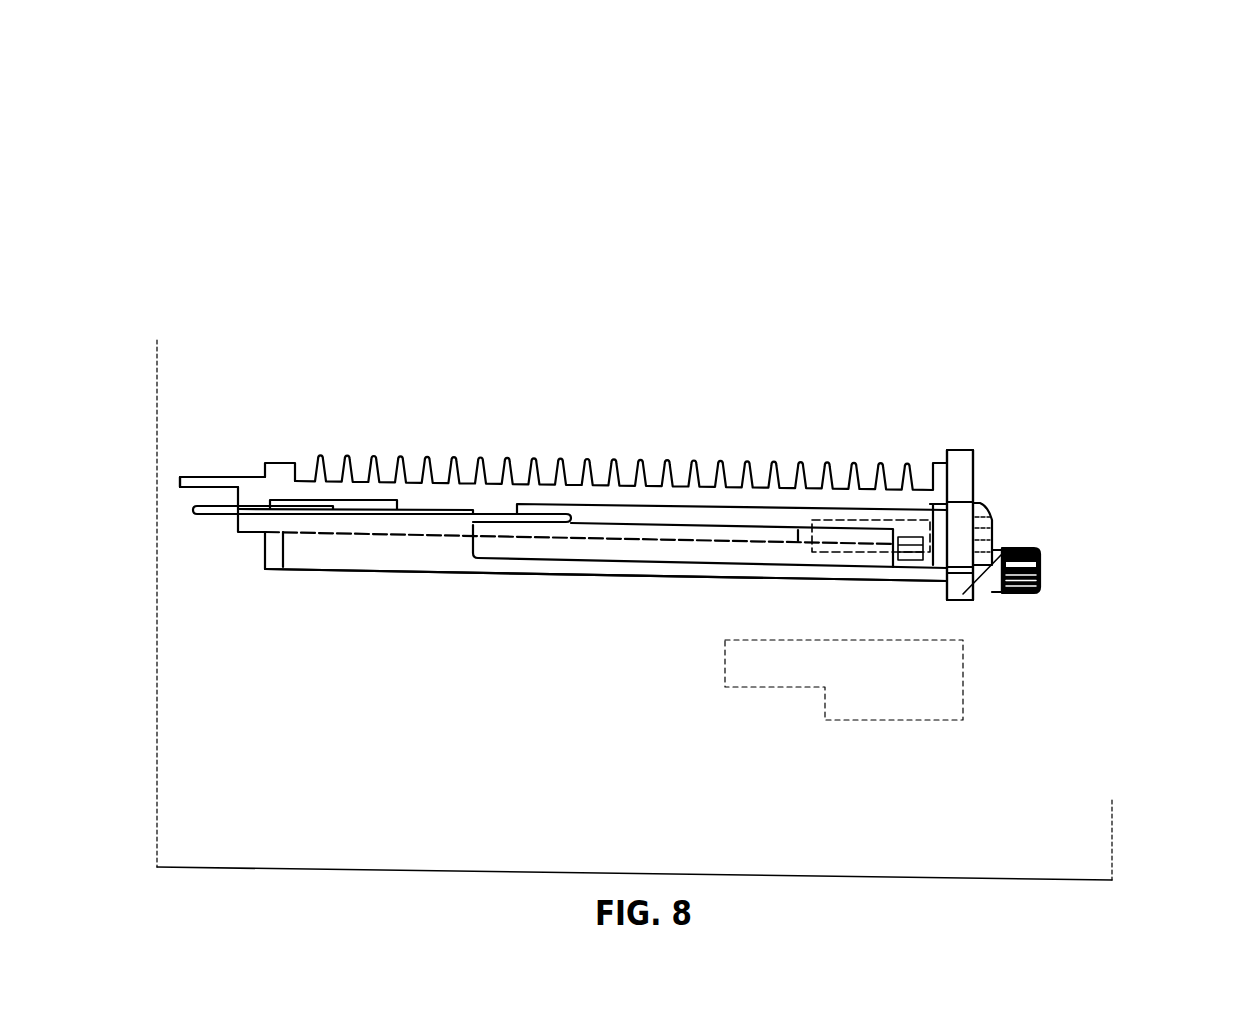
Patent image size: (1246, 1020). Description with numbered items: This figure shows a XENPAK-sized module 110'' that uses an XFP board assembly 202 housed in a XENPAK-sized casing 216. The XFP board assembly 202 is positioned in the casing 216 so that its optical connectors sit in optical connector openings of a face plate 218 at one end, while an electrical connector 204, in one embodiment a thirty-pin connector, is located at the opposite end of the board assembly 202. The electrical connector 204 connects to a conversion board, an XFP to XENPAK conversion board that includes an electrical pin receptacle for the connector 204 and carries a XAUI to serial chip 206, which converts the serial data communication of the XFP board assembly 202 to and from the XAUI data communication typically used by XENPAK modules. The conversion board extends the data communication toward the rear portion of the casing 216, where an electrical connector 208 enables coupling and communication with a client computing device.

The sprinkler body assembly 110'' is at (691, 327).
The XFP board assembly 202 is at (682, 527).
The electrical connector 204 is at (550, 515).
The XAUI to serial chip 206 is at (322, 505).
The electrical connector 208 is at (224, 512).
The XENPAK-sized casing 216 is at (478, 488).
The face plate 218 is at (970, 533).